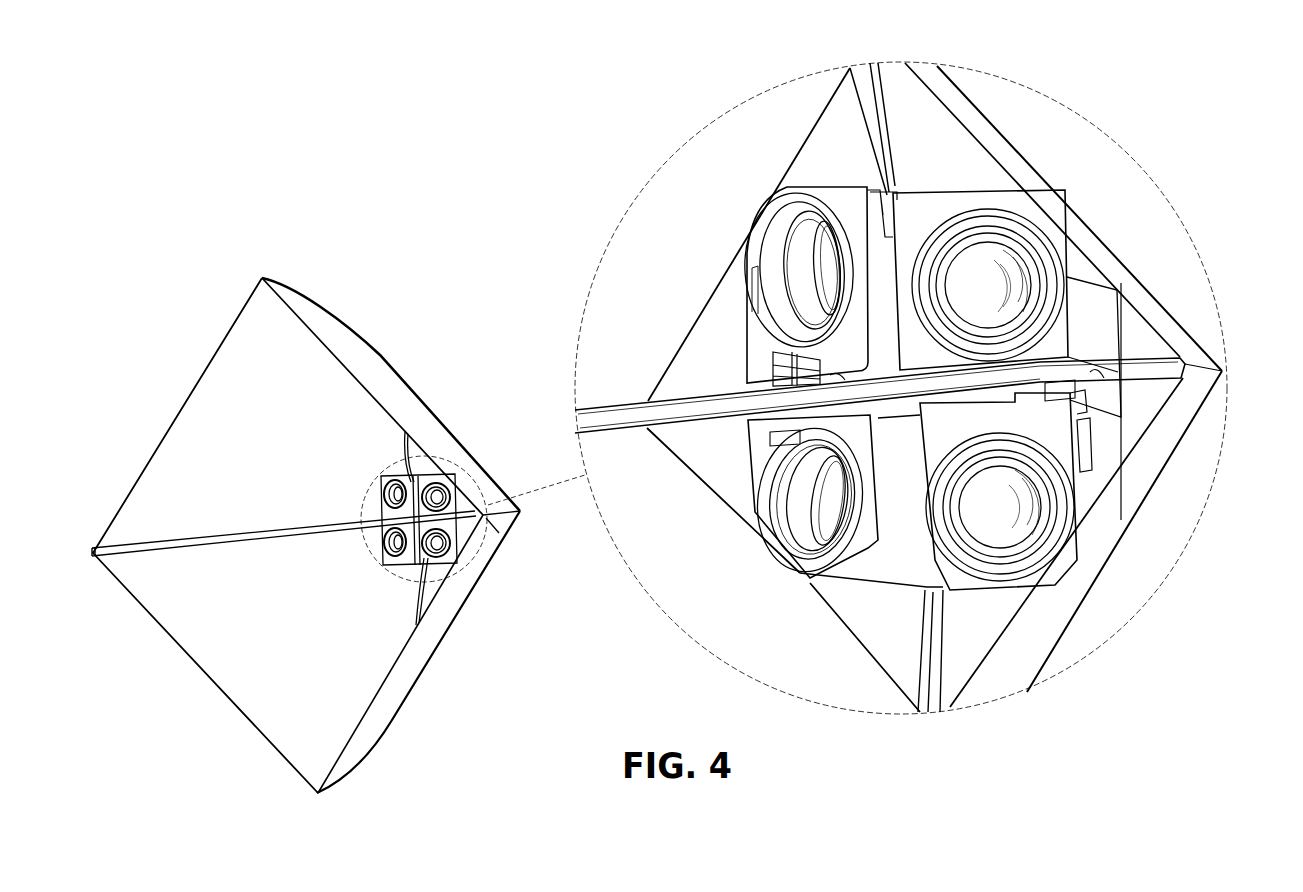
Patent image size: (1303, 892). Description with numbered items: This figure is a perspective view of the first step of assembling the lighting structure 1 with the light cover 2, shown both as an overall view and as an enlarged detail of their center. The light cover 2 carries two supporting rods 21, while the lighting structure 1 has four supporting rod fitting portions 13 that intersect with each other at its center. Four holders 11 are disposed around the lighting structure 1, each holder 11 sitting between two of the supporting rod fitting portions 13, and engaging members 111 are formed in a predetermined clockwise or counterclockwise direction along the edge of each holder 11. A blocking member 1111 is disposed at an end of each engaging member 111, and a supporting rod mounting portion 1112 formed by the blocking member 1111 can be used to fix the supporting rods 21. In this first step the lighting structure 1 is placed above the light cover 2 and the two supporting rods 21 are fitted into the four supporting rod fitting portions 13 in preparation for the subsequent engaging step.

The lighting structure 1 is at (441, 458).
The light cover 2 is at (395, 342).
The holder 11 is at (1040, 227).
The supporting rod fitting portion 13 is at (770, 372).
The supporting rod 21 is at (868, 117).
The engaging member 111 is at (1072, 475).
The blocking member 1111 is at (1074, 440).
The supporting rod mounting portion 1112 is at (1078, 398).